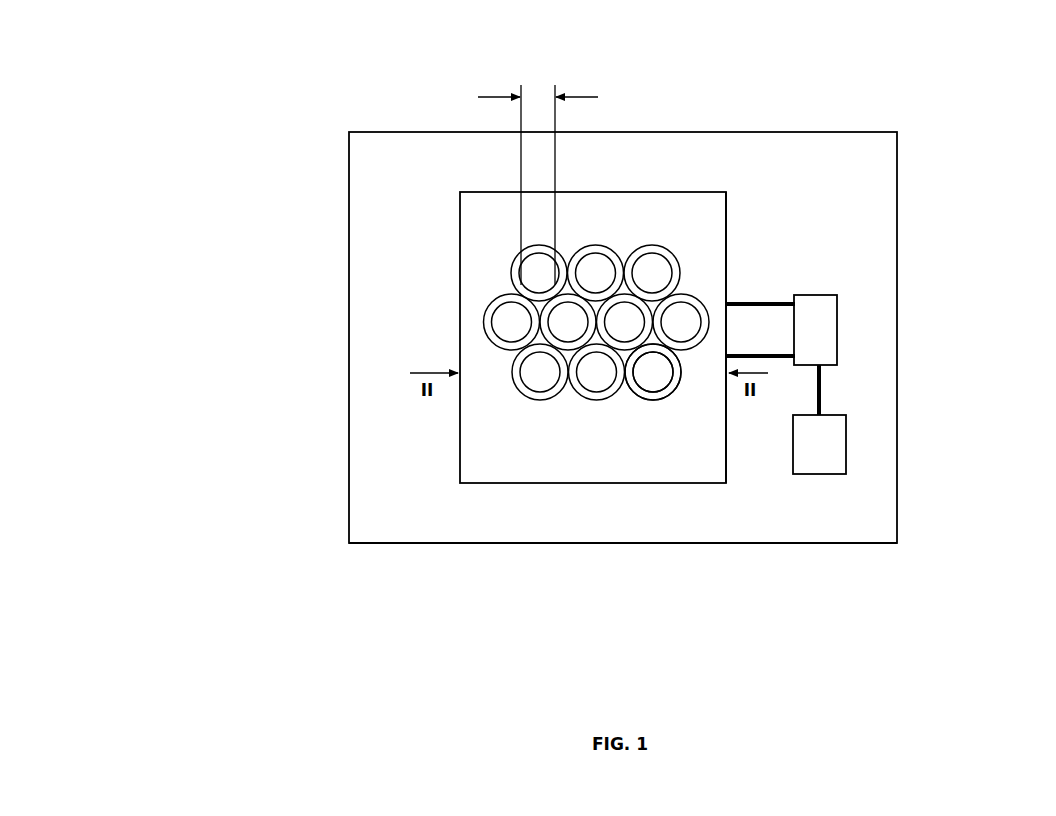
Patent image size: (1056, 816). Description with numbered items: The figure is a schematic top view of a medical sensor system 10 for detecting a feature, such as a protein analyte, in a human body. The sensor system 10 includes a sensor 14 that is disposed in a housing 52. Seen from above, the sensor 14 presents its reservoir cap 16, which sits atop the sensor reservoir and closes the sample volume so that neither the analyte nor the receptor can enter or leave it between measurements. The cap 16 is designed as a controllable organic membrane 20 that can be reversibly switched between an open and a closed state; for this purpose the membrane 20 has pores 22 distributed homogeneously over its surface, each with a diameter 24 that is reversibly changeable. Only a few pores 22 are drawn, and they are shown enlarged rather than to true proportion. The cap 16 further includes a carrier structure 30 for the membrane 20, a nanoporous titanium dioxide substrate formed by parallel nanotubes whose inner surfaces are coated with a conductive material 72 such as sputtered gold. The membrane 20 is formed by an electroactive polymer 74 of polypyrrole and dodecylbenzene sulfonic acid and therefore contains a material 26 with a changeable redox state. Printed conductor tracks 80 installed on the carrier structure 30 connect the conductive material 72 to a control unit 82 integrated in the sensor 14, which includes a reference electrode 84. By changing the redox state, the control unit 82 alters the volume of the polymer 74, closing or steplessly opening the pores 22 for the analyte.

The medical sensor system 10 is at (340, 179).
The sensor 14 is at (688, 179).
The reservoir cap 16 is at (707, 240).
The controllable organic membrane 20 is at (624, 222).
The pores 22 is at (537, 375).
The diameter 24 is at (541, 97).
The material having changeable redox state 26 is at (617, 375).
The carrier structure 30 is at (694, 462).
The housing 52 is at (382, 543).
The conductive material 72 is at (527, 366).
The electroactive polymer 74 is at (643, 565).
The printed conductor tracks 80 is at (777, 301).
The control unit 82 is at (828, 328).
The reference electrode 84 is at (828, 458).